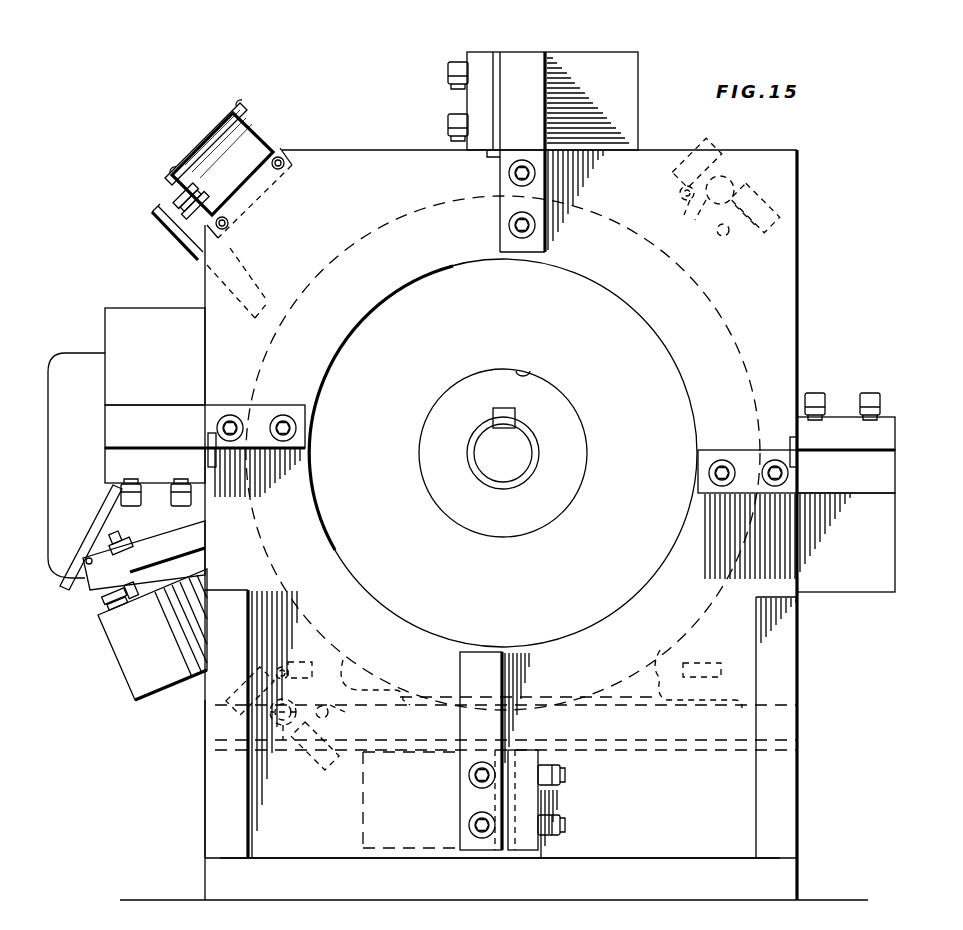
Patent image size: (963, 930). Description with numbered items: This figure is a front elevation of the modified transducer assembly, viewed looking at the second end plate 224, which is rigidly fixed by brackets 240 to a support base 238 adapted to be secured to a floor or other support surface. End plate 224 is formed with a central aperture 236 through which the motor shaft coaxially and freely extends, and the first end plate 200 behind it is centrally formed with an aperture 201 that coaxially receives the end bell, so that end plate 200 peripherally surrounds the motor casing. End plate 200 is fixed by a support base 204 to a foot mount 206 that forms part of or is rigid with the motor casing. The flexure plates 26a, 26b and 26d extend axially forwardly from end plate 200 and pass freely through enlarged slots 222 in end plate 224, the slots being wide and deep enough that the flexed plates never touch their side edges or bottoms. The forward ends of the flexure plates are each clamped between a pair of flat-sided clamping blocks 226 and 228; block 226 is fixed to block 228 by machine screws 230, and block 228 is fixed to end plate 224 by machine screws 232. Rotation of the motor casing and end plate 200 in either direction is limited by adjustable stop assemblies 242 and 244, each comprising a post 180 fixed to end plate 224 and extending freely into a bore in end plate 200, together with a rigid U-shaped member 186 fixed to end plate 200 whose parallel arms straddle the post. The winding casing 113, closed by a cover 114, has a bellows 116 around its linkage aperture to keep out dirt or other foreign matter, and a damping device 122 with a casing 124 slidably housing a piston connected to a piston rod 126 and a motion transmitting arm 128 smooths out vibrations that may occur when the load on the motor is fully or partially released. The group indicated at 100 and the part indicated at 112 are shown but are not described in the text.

The optical sensor assembly 100 is at (200, 200).
The mounting bracket 112 is at (168, 222).
The casing 113 is at (222, 162).
The cover 114 is at (210, 120).
The bellows 116 is at (172, 192).
The damping device 122 is at (131, 613).
The casing 124 is at (110, 690).
The piston rod 126 is at (104, 605).
The motion transmitting arm 128 is at (144, 555).
The post 180 is at (738, 172).
The U-shaped member 186 is at (684, 212).
The end plate 200 is at (490, 155).
The aperture 201 is at (348, 251).
The support base 204 is at (590, 700).
The foot mount 206 is at (348, 663).
The slots 222 is at (497, 858).
The end plate 224 is at (797, 192).
The clamping block 226 is at (845, 398).
The clamping block 228 is at (553, 48).
The machine screws 230 is at (448, 72).
The machine screws 232 is at (505, 489).
The central aperture 236 is at (528, 372).
The support base 238 is at (220, 880).
The brackets 240 is at (222, 826).
The adjustable stop assembly 242 is at (725, 245).
The adjustable stop assembly 244 is at (316, 765).
The flexure plate 26a is at (120, 468).
The flexure plate 26b is at (503, 65).
The flexure plate 26d is at (530, 764).